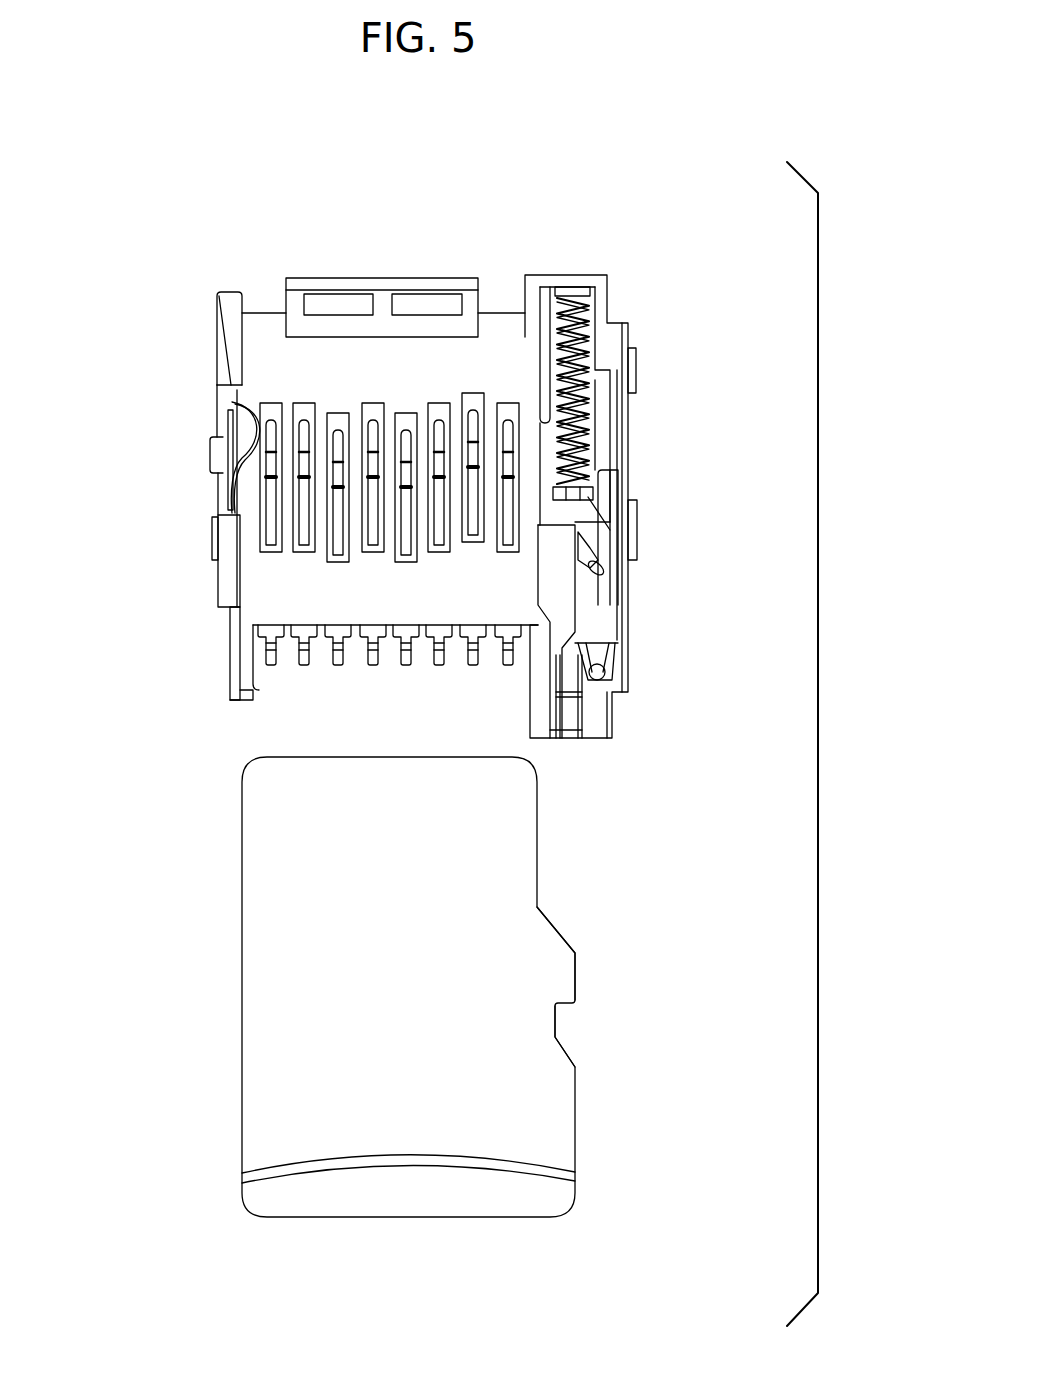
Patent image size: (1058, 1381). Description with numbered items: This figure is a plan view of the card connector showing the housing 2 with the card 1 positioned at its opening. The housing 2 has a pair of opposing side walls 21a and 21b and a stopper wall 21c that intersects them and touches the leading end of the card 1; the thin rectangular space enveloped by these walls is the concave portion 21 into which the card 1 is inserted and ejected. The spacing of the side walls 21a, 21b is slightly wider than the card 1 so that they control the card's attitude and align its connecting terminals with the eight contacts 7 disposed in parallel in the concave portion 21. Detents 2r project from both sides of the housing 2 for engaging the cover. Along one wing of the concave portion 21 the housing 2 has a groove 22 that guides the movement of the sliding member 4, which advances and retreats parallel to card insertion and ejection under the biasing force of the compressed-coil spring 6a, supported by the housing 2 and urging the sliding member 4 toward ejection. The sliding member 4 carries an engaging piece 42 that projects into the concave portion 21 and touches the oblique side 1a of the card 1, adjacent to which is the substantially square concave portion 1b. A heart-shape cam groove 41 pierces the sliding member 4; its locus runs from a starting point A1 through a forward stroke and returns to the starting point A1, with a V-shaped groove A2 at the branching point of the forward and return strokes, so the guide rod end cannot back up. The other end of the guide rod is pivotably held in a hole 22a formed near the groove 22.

The card 1 is at (392, 1222).
The oblique side 1a is at (557, 928).
The concave portion 1b is at (563, 1027).
The housing 2 is at (213, 346).
The detents 2r is at (212, 545).
The sliding member 4 is at (617, 632).
The compressed-coil spring 6a is at (543, 421).
The contacts 7 is at (265, 680).
The concave portion 21 is at (500, 358).
The side wall 21a is at (575, 715).
The side wall 21b is at (240, 608).
The stopper wall 21c is at (343, 338).
The groove 22 is at (597, 407).
The hole 22a is at (607, 688).
The heart-shape cam groove 41 is at (610, 545).
The engaging piece 42 is at (550, 577).
The starting point A1 is at (600, 480).
The V-shaped groove A2 is at (600, 572).